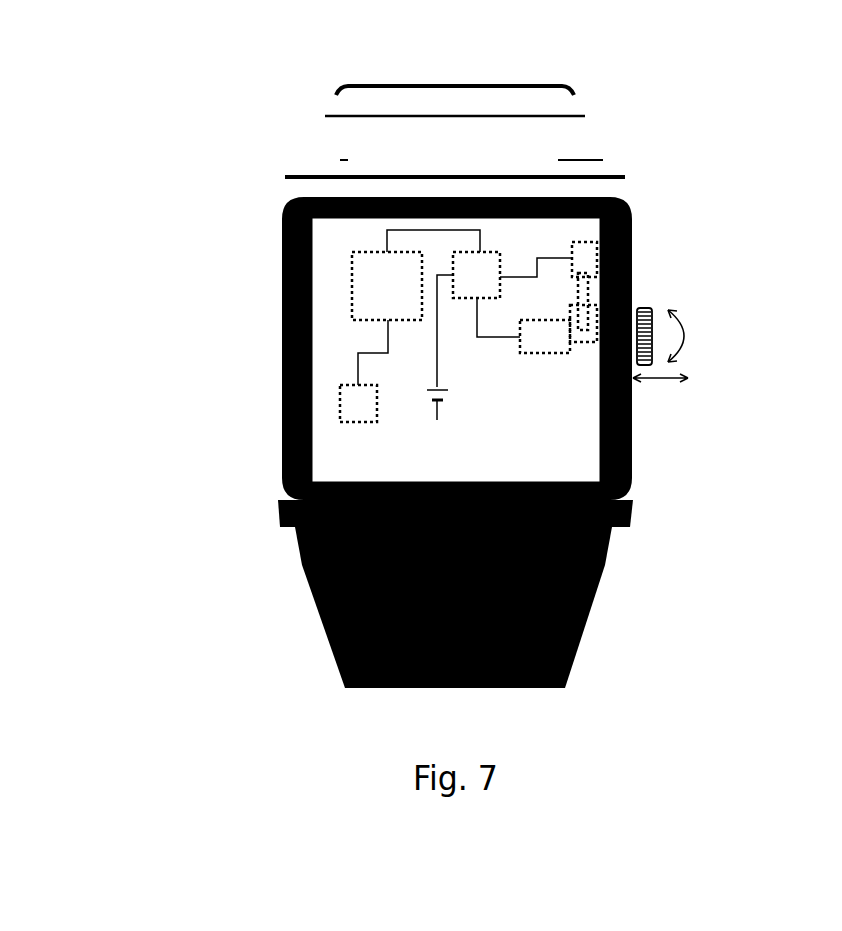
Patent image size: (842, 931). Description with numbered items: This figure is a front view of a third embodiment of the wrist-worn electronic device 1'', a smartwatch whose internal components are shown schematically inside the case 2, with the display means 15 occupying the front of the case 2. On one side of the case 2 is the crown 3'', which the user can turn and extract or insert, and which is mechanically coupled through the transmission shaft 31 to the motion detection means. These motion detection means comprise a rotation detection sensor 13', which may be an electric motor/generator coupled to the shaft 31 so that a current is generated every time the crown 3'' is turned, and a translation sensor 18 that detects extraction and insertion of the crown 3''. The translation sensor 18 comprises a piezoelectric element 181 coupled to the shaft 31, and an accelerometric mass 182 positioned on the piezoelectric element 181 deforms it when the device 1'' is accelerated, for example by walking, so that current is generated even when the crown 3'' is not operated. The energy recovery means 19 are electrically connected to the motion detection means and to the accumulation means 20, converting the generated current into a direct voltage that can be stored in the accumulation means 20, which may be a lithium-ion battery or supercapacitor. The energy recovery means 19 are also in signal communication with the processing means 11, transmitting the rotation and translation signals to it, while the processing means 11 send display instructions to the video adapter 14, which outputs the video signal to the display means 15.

The wrist-worn electronic device 1'' is at (336, 362).
The case 2 is at (633, 202).
The display means 15 is at (567, 465).
The crown 3'' is at (711, 320).
The processing means 11 is at (352, 285).
The energy recovery means 19 is at (490, 252).
The translation sensor 18 is at (597, 253).
The piezoelectric element 181 is at (588, 293).
The accelerometric mass 182 is at (572, 310).
The transmission shaft 31 is at (585, 343).
The rotation detection sensor 13' is at (520, 400).
The video adapter 14 is at (340, 400).
The accumulation means 20 is at (433, 407).